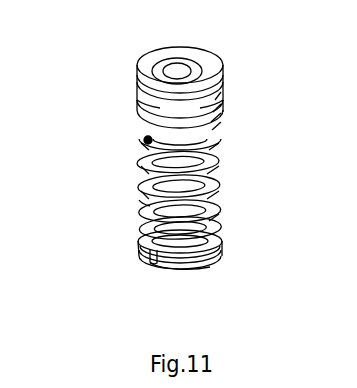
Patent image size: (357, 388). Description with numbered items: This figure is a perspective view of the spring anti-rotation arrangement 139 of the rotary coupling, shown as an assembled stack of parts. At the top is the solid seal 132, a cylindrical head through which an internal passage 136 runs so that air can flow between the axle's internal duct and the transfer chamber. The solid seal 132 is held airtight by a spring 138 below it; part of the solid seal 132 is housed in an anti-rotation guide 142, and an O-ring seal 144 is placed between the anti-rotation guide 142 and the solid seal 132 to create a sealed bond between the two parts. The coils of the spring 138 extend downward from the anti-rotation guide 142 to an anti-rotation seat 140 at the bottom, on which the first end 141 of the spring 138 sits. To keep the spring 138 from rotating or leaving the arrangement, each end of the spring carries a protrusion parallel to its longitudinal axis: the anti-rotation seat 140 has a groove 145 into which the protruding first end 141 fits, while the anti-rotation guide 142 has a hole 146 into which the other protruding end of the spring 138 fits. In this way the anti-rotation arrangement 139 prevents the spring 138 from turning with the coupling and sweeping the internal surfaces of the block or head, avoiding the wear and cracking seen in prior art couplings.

The solid seal 132 is at (212, 58).
The internal passage 136 is at (179, 70).
The spring 138 is at (222, 181).
The anti-rotation arrangement 139 is at (122, 200).
The anti-rotation seat 140 is at (213, 273).
The first end of the spring 141 is at (163, 270).
The anti-rotation guide 142 is at (222, 131).
The O-ring seal 144 is at (140, 126).
The groove 145 is at (148, 256).
The hole 146 is at (141, 142).